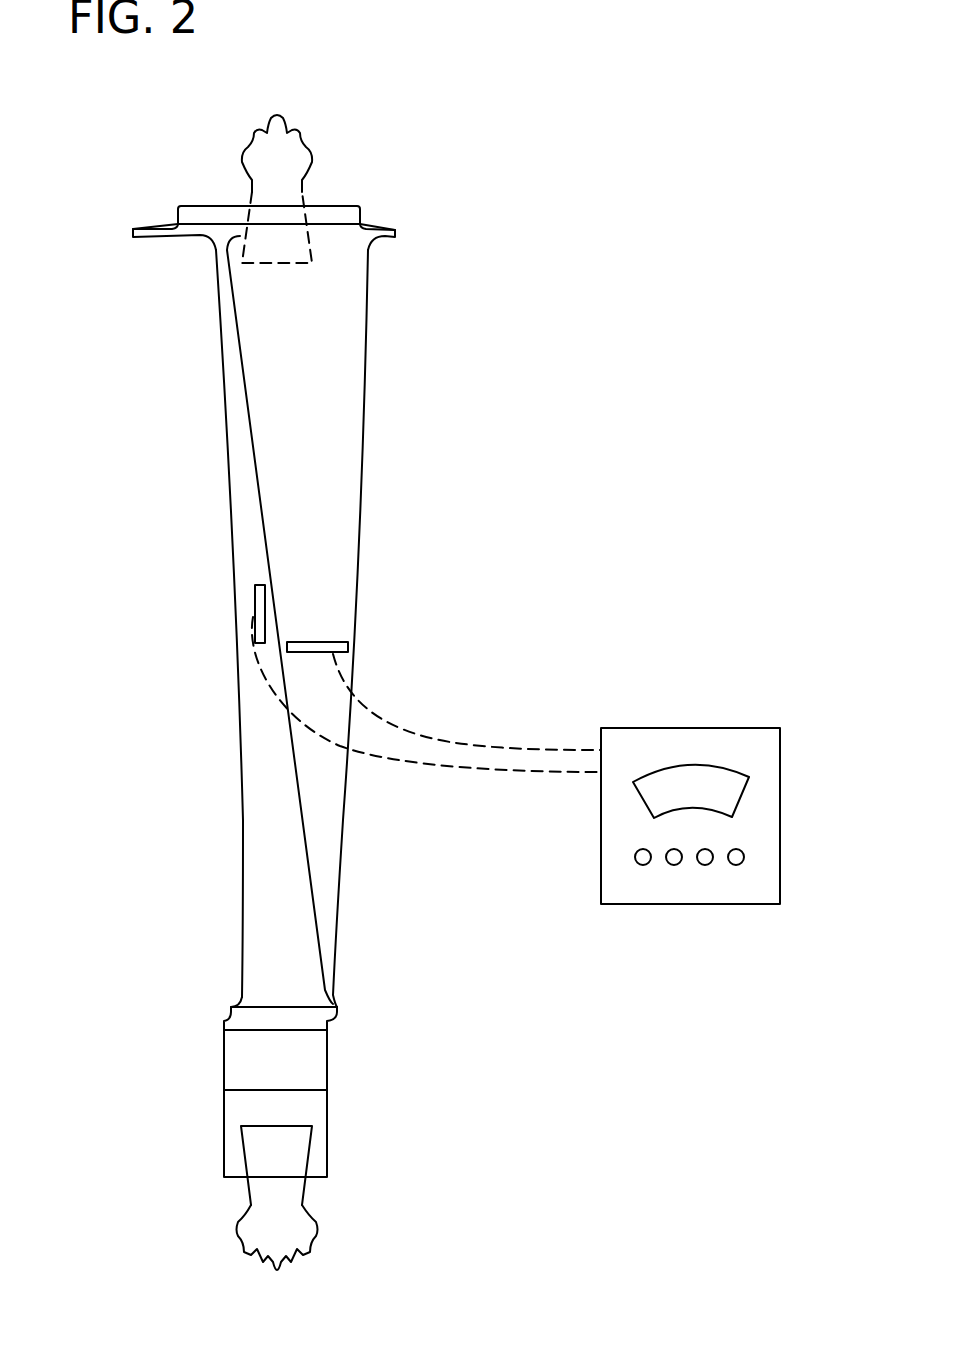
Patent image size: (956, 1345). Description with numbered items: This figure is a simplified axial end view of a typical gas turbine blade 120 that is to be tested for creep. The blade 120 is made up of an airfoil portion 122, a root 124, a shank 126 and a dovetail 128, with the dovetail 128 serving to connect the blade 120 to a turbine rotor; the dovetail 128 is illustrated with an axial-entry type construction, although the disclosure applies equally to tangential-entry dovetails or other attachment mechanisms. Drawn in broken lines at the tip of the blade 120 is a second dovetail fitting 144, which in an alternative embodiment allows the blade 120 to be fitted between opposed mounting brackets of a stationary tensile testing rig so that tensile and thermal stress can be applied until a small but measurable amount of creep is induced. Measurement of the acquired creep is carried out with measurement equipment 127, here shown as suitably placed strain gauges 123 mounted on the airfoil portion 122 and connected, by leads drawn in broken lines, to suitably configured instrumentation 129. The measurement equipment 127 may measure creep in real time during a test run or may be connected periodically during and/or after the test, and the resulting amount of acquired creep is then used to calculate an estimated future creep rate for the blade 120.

The gas turbine blade 120 is at (420, 202).
The airfoil portion 122 is at (336, 573).
The strain gauges 123 is at (265, 601).
The root 124 is at (248, 953).
The shank 126 is at (287, 1145).
The measurement equipment 127 is at (797, 720).
The dovetail 128 is at (283, 1227).
The instrumentation 129 is at (687, 888).
The second dovetail fitting 144 is at (250, 163).